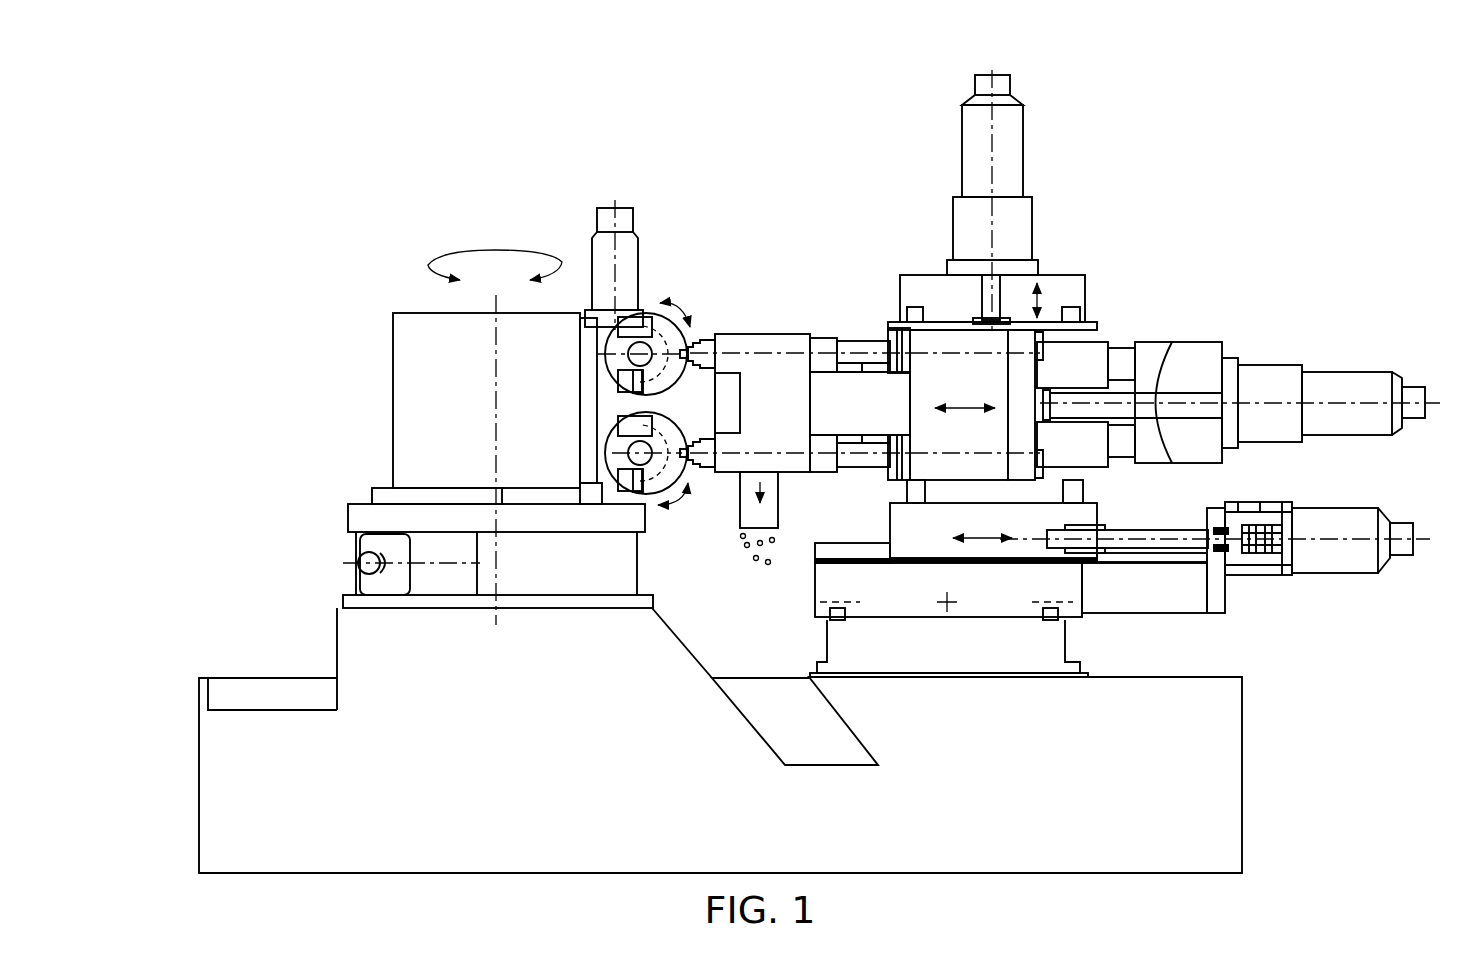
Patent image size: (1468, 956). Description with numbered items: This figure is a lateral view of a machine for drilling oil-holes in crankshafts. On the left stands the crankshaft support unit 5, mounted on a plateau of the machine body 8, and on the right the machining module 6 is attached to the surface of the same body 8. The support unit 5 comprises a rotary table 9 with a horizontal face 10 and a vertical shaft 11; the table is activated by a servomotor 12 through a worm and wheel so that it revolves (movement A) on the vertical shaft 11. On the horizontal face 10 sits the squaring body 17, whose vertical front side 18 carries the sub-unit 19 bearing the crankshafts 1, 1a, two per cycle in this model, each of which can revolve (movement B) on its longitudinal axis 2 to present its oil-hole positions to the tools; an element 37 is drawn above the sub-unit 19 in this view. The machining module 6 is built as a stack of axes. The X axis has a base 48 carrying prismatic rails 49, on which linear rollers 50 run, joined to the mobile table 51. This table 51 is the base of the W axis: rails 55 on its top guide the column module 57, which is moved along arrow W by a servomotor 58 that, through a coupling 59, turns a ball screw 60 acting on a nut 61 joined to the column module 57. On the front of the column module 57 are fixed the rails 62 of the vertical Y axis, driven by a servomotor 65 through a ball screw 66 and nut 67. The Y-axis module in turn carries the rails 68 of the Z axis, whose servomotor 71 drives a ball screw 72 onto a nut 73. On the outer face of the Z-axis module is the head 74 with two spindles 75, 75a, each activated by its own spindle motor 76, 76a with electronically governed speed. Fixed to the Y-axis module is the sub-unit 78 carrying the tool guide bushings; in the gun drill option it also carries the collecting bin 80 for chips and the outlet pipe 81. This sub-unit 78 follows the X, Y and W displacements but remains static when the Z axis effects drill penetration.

The crankshaft 1 is at (672, 337).
The second workpiece 1a is at (665, 447).
The longitudinal axis 2 is at (680, 365).
The crankshaft support unit 5 is at (445, 196).
The machining module 6 is at (1127, 157).
The body 8 is at (205, 737).
The rotary table 9 is at (373, 518).
The horizontal face 10 is at (362, 498).
The vertical shaft 11 is at (493, 410).
The servomotor 12 is at (430, 585).
The squaring body 17 is at (413, 347).
The front side 18 is at (585, 313).
The sub-unit 19 is at (657, 280).
The chuck drive motor 37 is at (605, 217).
The base 48 is at (1037, 660).
The rails 49 is at (1047, 617).
The linear rollers 50 is at (1033, 605).
The mobile table 51 is at (1053, 580).
The rails 55 is at (828, 548).
The column module 57 is at (905, 300).
The servomotor 58 is at (1365, 520).
The coupling 59 is at (1253, 520).
The ball screw 60 is at (1165, 540).
The nut 61 is at (1102, 528).
The rails 62 is at (1082, 327).
The servomotor 65 is at (998, 85).
The ball screw 66 is at (990, 287).
The nut 67 is at (982, 323).
The rails 68 is at (1153, 372).
The servomotor 71 is at (1358, 383).
The ball screw 72 is at (1185, 398).
The nut 73 is at (1050, 392).
The head 74 is at (923, 396).
The spindle 75 is at (913, 348).
The spindle 75a is at (917, 450).
The spindle motor 76 is at (1100, 350).
The spindle motor 76a is at (1093, 453).
The sub-unit 78 is at (748, 312).
The collecting bin 80 is at (788, 385).
The outlet pipe 81 is at (768, 490).